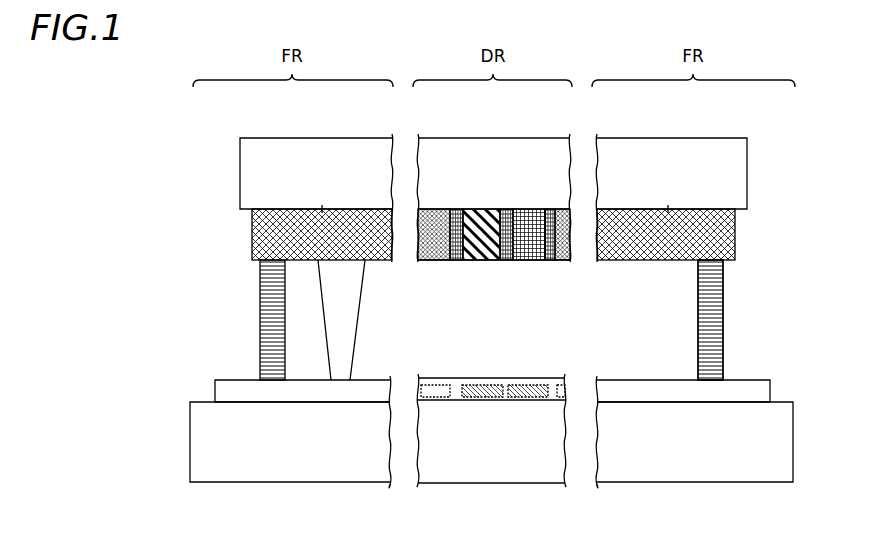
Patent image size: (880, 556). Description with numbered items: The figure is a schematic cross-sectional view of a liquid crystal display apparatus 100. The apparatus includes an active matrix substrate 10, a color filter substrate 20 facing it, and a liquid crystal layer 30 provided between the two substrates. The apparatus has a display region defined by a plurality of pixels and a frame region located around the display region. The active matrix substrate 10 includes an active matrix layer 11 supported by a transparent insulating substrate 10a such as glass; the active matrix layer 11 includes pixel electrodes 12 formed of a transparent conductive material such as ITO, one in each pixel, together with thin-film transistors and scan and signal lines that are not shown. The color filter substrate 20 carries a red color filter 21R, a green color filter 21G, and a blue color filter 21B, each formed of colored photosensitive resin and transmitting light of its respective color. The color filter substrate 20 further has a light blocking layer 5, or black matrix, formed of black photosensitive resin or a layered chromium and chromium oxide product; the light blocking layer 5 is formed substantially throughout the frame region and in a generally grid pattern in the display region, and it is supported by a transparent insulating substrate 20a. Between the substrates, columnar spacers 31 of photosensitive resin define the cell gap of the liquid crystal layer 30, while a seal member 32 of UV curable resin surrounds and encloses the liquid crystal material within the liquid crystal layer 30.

The liquid crystal display apparatus 100 is at (829, 126).
The color filter substrate 20 is at (780, 138).
The transparent insulating substrate 20a is at (275, 174).
The red color filter 21R is at (437, 209).
The green color filter 21G is at (482, 209).
The blue color filter 21B is at (530, 209).
The light blocking layer 5 is at (323, 209).
The liquid crystal layer 30 is at (673, 325).
The columnar spacer 31 is at (338, 318).
The seal member 32 is at (260, 282).
The active matrix substrate 10 is at (813, 380).
The transparent insulating substrate 10a is at (220, 437).
The active matrix layer 11 is at (215, 392).
The pixel electrode 12 is at (481, 398).